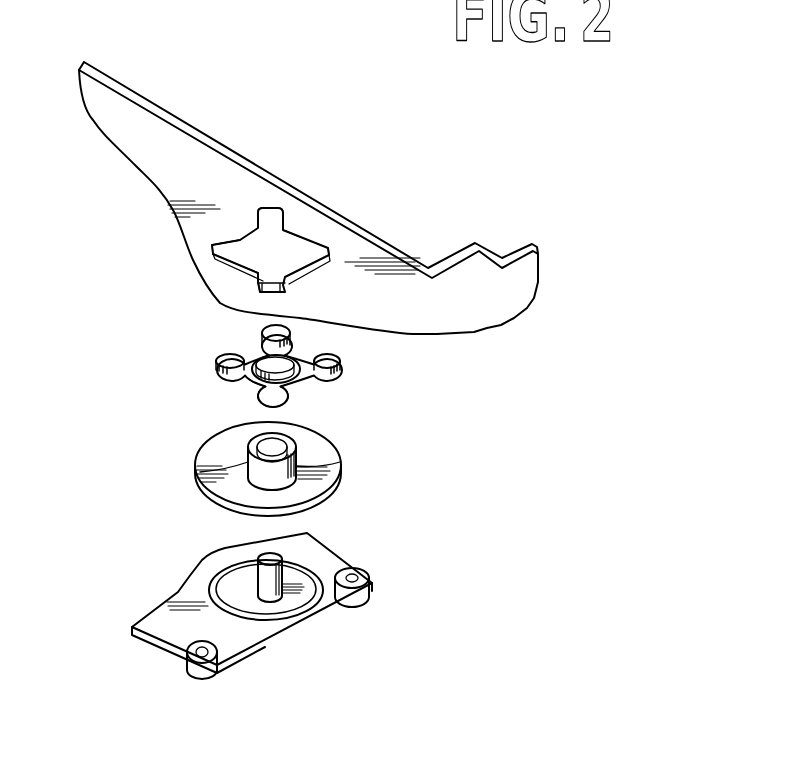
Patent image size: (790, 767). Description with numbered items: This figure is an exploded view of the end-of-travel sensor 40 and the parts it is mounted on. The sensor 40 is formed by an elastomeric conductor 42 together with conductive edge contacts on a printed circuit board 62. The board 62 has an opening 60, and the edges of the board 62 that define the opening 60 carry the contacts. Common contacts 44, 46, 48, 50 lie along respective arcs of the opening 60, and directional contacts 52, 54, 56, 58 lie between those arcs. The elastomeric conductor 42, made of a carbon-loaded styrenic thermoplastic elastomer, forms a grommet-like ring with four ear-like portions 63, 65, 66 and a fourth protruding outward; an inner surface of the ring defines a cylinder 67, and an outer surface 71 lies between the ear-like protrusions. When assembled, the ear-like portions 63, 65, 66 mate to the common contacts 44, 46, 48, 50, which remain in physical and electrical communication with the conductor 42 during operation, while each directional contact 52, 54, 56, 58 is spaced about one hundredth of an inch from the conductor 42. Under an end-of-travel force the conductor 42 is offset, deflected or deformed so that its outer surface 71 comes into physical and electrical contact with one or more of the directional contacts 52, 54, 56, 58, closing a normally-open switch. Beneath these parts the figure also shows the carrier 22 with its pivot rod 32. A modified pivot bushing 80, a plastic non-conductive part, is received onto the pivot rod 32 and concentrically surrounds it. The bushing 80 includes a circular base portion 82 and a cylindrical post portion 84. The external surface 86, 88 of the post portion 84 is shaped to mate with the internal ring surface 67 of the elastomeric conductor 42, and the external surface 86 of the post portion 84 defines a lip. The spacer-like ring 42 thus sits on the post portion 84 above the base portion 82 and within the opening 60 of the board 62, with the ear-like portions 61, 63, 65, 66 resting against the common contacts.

The carrier 22 is at (158, 608).
The pivot rod 32 is at (288, 588).
The end-of-travel sensor 40 is at (308, 186).
The elastomeric conductor 42 is at (346, 346).
The common contact 44 is at (283, 207).
The common contact 46 is at (330, 250).
The common contact 48 is at (262, 290).
The common contact 50 is at (212, 250).
The directional contact 52 is at (300, 237).
The directional contact 54 is at (308, 202).
The directional contact 56 is at (217, 270).
The directional contact 58 is at (240, 240).
The opening 60 is at (250, 188).
The right lobe 61 is at (340, 375).
The printed circuit board 62 is at (138, 93).
The ear-like portion 63 is at (240, 328).
The ear-like portion 65 is at (287, 408).
The ear-like portion 66 is at (217, 372).
The cylinder 67 is at (253, 386).
The outer surface 71 is at (290, 400).
The pivot bushing 80 is at (268, 485).
The circular base portion 82 is at (337, 481).
The cylindrical post portion 84 is at (242, 490).
The external surface 86 is at (222, 475).
The external surface 88 is at (300, 458).